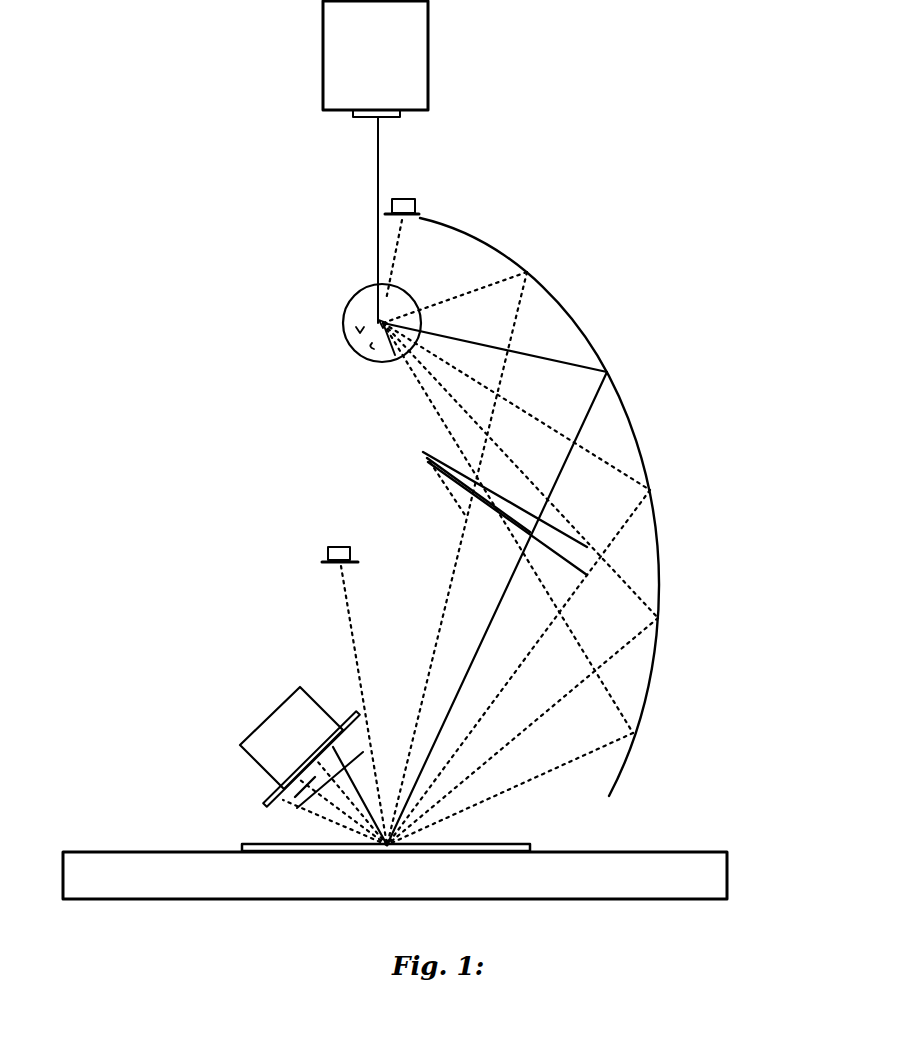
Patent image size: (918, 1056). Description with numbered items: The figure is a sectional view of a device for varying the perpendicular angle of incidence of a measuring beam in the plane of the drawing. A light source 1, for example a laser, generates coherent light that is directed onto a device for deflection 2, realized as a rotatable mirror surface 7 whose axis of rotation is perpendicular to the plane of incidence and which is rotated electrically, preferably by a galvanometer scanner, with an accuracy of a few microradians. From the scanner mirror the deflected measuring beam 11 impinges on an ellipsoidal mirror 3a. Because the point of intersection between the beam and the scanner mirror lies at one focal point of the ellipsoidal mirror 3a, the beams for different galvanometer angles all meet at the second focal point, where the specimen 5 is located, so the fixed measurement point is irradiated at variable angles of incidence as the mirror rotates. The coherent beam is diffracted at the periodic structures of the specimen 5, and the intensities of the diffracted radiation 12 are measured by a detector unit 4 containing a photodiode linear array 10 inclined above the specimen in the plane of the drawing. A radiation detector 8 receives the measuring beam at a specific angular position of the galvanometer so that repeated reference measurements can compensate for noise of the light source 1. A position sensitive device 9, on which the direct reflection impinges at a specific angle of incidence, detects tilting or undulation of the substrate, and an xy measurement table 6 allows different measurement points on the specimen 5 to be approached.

The light source 1 is at (420, 55).
The device for deflection 2 is at (357, 354).
The ellipsoidal mirror 3a is at (574, 321).
The detector unit 4 is at (275, 758).
The specimen 5 is at (458, 842).
The xy measurement table 6 is at (715, 870).
The rotatable mirror surface 7 is at (383, 323).
The radiation detector 8 is at (407, 192).
The position sensitive device 9 is at (330, 540).
The photodiode linear array 10 is at (348, 715).
The measuring beam 11 is at (428, 495).
The diffracted radiation 12 is at (238, 796).